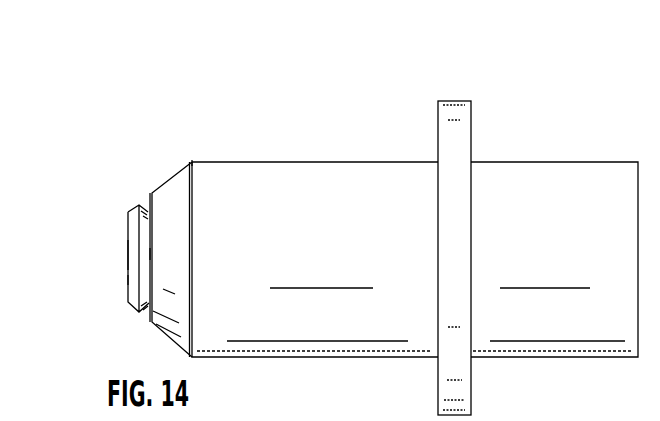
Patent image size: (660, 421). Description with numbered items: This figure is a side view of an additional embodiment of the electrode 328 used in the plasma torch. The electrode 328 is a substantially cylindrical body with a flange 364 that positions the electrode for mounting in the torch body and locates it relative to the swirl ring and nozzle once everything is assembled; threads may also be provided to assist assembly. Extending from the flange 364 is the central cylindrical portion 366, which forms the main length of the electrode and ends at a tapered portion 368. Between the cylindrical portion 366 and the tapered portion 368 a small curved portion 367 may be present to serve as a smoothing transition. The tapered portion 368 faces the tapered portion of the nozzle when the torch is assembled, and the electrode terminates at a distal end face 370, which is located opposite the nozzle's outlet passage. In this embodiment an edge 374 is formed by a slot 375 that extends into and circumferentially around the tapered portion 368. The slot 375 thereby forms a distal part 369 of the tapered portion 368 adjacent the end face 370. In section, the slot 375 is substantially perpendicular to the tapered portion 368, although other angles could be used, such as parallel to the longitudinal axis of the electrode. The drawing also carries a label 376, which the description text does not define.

The electrode 328 is at (292, 82).
The flange 364 is at (453, 100).
The central cylindrical portion 366 is at (357, 161).
The curved portion 367 is at (193, 160).
The tapered portion 368 is at (164, 184).
The distal part 369 is at (134, 209).
The end face 370 is at (129, 255).
The edge 374 is at (153, 253).
The slot 375 is at (146, 206).
The cap edge 376 is at (128, 280).